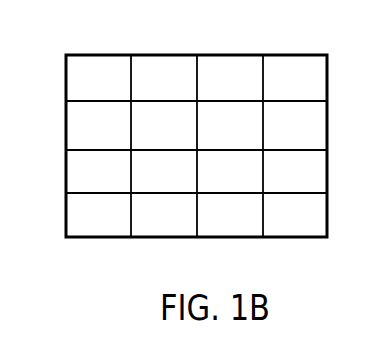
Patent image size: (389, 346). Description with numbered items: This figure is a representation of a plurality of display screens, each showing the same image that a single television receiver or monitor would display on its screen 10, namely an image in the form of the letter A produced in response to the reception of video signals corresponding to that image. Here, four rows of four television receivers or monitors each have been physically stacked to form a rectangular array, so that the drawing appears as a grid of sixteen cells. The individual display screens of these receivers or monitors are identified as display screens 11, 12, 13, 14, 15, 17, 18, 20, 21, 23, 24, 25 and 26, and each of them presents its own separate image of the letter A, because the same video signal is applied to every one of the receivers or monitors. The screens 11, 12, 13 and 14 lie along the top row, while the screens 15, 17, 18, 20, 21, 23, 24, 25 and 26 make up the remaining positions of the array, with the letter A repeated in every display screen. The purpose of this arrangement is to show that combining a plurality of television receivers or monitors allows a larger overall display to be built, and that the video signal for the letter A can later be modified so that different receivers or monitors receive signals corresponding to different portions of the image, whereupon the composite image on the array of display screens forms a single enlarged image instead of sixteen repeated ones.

The screen 10 is at (140, 125).
The display screen 11 is at (124, 55).
The display screen 12 is at (163, 55).
The display screen 13 is at (238, 55).
The display screen 14 is at (300, 55).
The display screen 15 is at (78, 124).
The display screen 17 is at (253, 125).
The display screen 18 is at (322, 132).
The display screen 20 is at (142, 178).
The display screen 21 is at (255, 183).
The display screen 23 is at (67, 222).
The display screen 24 is at (150, 224).
The display screen 25 is at (218, 225).
The display screen 26 is at (317, 228).